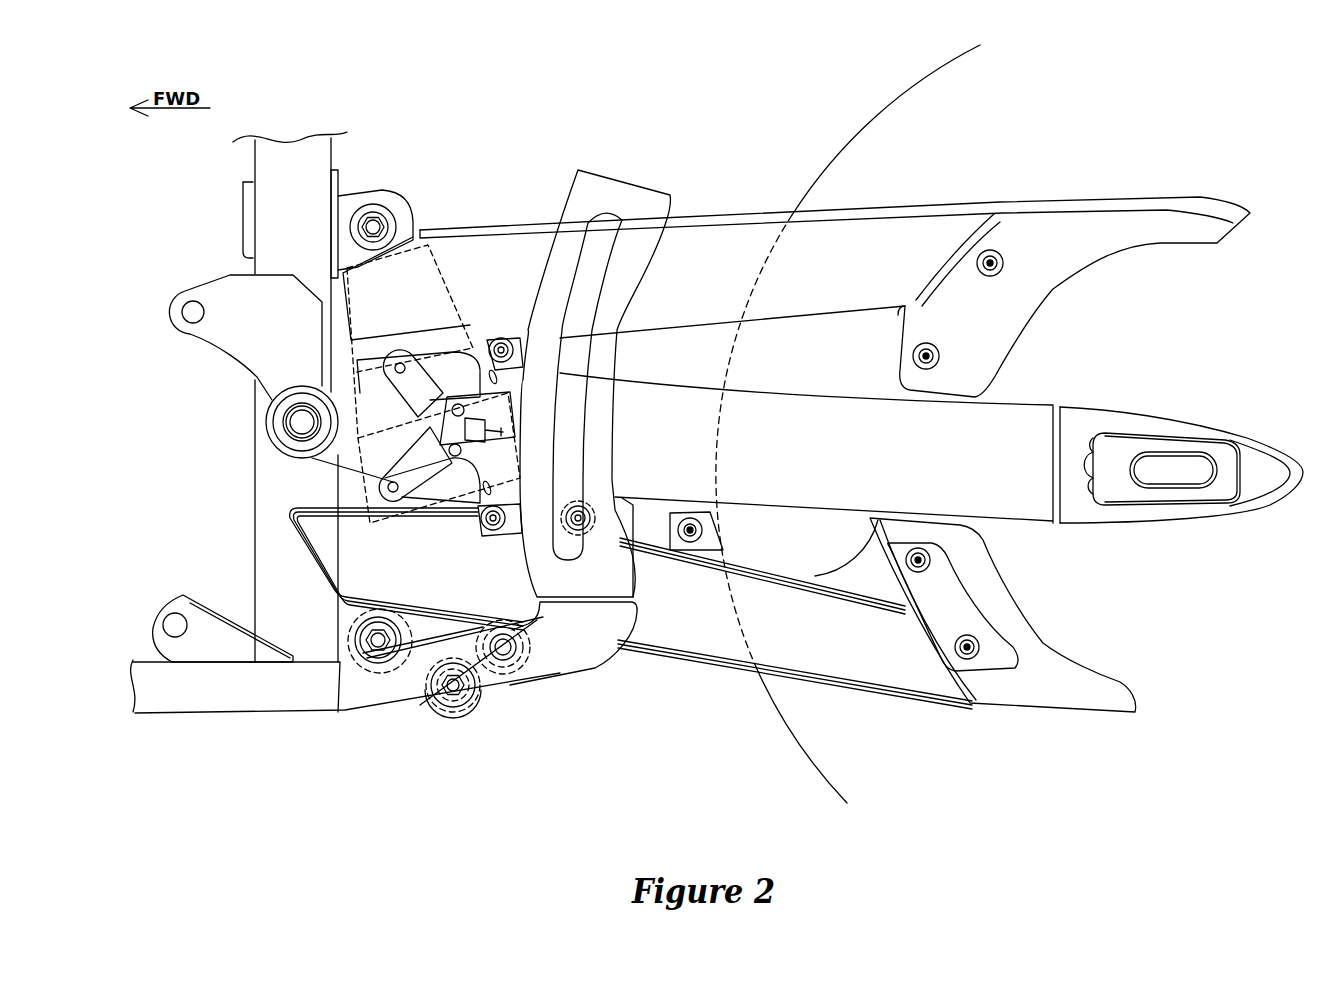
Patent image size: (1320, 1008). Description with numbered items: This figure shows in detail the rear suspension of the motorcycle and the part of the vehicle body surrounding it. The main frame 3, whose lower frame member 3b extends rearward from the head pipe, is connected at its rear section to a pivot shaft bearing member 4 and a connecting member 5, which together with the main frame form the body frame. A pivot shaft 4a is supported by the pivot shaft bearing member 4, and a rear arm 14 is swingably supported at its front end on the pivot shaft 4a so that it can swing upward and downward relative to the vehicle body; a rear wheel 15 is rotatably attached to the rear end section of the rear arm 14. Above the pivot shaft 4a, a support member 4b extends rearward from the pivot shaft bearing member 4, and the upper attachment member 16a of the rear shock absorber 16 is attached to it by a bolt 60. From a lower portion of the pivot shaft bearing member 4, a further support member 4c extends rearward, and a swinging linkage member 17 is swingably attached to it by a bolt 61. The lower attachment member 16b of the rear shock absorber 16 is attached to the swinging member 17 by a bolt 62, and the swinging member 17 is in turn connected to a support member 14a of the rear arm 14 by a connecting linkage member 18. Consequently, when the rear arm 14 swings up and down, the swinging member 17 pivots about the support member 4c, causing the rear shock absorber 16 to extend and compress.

The main frame 3 is at (345, 681).
The lower frame member 3b is at (228, 697).
The pivot shaft bearing member 4 is at (318, 152).
The pivot shaft 4a is at (298, 421).
The support member 4b is at (358, 198).
The support member 4c is at (415, 667).
The connecting member 5 is at (573, 213).
The rear arm 14 is at (803, 425).
The support member 14a is at (652, 565).
The rear wheel 15 is at (840, 143).
The rear shock absorber 16 is at (478, 329).
The upper attachment member 16a is at (442, 280).
The lower attachment member 16b is at (531, 566).
The swinging linkage member 17 is at (383, 680).
The connecting linkage member 18 is at (566, 570).
The bolt 60 is at (385, 219).
The bolt 61 is at (365, 662).
The bolt 62 is at (526, 670).